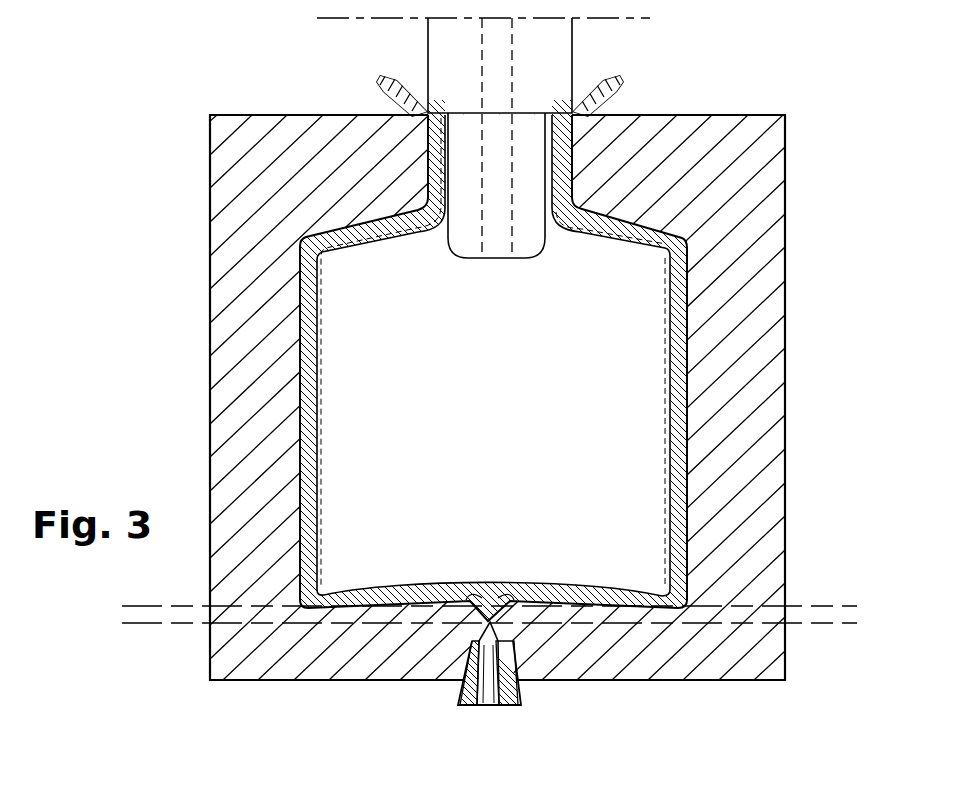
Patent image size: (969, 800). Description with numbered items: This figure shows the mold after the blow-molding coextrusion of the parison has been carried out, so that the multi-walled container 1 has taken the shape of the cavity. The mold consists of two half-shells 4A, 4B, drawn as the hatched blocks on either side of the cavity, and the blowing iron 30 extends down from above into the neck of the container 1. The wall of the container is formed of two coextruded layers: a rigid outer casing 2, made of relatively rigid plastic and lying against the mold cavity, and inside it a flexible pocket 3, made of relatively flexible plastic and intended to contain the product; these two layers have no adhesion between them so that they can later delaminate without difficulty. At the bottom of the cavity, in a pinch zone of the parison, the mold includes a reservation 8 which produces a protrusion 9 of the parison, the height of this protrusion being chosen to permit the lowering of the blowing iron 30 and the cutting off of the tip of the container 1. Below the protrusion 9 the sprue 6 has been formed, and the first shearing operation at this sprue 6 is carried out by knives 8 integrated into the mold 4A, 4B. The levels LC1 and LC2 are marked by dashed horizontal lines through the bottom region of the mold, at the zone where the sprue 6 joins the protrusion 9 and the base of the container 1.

The container 1 is at (492, 394).
The rigid outer casing 2 is at (300, 403).
The flexible pocket 3 is at (320, 453).
The half-shell 4A is at (232, 312).
The half-shell 4B is at (770, 243).
The sprue 6 is at (528, 700).
The knives 8 is at (458, 627).
The protrusion 9 is at (468, 604).
The blowing iron 30 is at (500, 52).
The level line LC1 is at (489, 636).
The level line LC2 is at (489, 592).